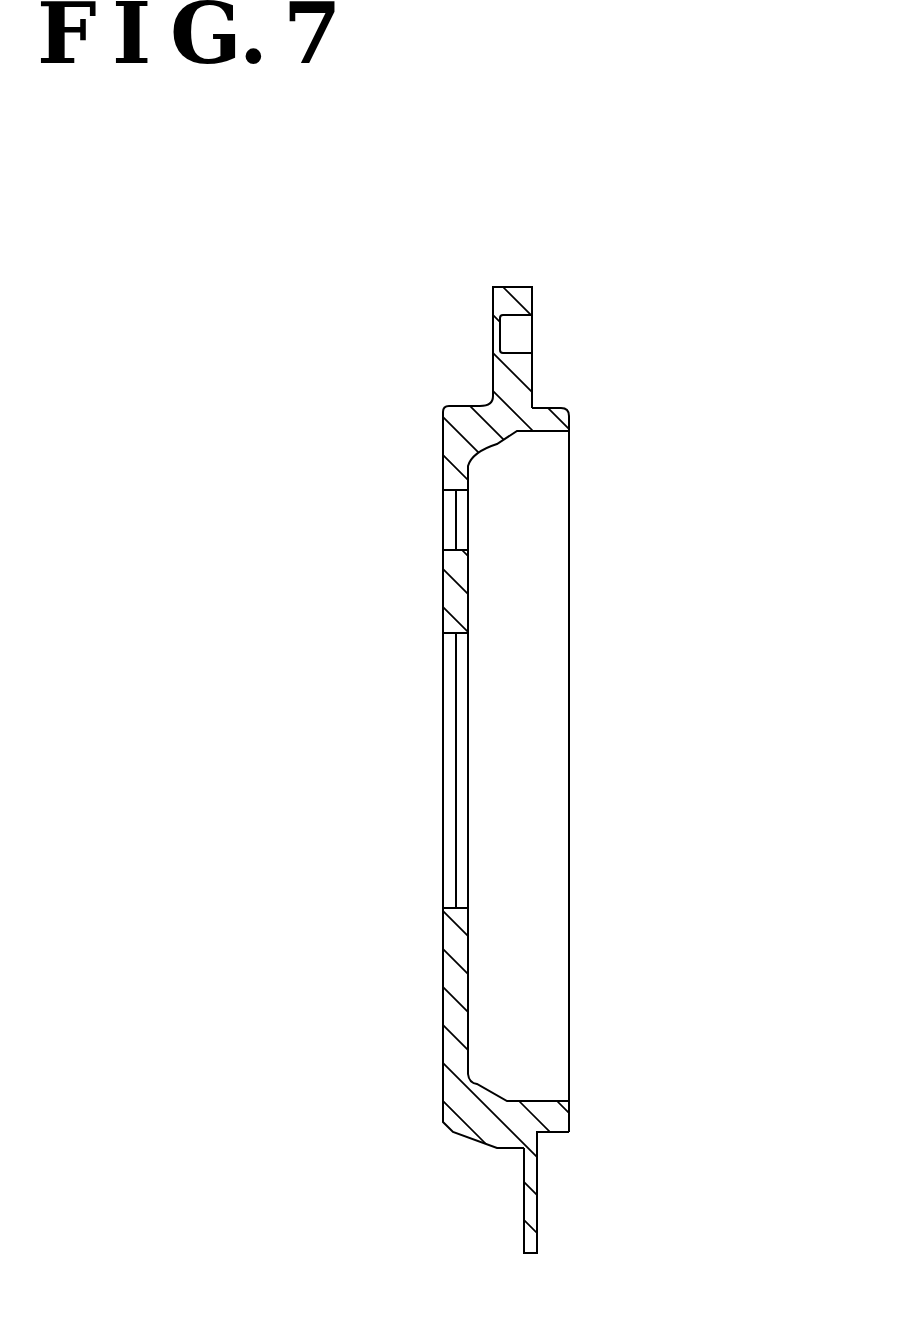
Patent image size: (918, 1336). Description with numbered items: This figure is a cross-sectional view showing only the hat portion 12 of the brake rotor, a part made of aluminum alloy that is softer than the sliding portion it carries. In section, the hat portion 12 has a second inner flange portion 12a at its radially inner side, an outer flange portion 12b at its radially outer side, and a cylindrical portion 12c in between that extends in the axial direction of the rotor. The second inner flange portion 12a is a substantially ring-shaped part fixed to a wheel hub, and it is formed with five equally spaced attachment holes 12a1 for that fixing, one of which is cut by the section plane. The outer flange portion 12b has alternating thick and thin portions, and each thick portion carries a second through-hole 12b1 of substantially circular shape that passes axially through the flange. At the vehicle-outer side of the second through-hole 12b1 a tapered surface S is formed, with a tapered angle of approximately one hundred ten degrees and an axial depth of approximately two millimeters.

The hat portion 12 is at (443, 607).
The second inner flange portion 12a is at (448, 968).
The attachment hole 12a1 is at (448, 521).
The outer flange portion 12b is at (513, 287).
The second through-hole 12b1 is at (517, 327).
The tapered surface S is at (498, 316).
The cylindrical portion 12c is at (570, 1116).